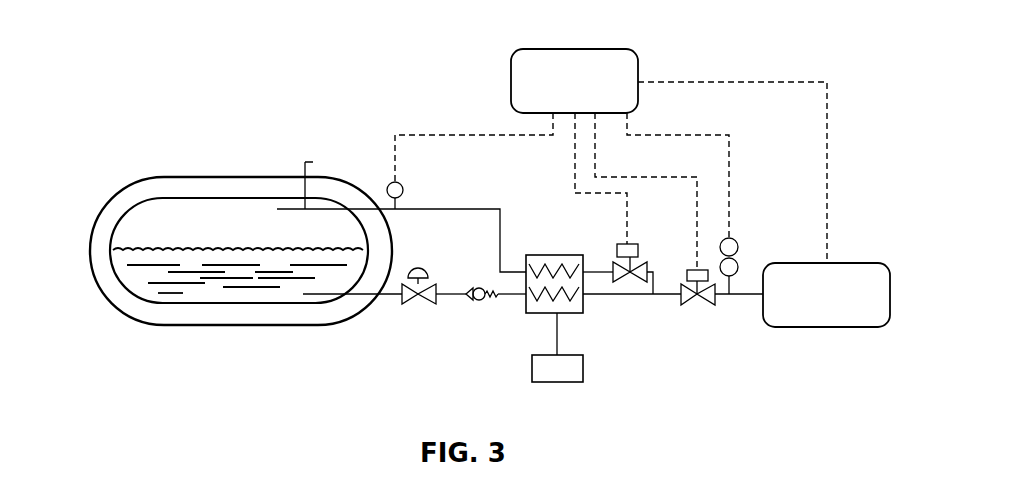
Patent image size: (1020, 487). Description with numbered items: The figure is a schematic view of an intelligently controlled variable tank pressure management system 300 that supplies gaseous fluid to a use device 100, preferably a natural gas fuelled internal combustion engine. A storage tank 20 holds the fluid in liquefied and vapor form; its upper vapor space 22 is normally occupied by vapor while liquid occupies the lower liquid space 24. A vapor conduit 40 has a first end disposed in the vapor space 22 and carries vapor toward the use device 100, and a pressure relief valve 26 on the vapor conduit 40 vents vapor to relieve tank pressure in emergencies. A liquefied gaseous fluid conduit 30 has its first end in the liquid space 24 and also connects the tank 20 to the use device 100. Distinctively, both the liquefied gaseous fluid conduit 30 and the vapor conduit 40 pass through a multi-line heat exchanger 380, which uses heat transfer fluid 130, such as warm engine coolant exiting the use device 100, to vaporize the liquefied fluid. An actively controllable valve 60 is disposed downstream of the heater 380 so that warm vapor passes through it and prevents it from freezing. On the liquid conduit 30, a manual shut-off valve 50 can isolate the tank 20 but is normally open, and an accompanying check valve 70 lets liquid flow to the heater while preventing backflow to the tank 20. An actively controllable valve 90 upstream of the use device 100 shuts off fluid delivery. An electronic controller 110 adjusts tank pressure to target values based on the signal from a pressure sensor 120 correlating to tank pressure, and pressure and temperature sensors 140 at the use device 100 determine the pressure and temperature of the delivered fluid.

The intelligently controlled variable tank pressure management system 300 is at (310, 90).
The storage tank 20 is at (147, 177).
The vapor space 22 is at (170, 220).
The liquid space 24 is at (185, 295).
The pressure relief valve 26 is at (304, 168).
The liquefied gaseous fluid conduit 30 is at (382, 297).
The vapor conduit 40 is at (463, 210).
The manual shut-off valve 50 is at (410, 305).
The actively controllable valve 60 is at (617, 263).
The check valve 70 is at (473, 305).
The actively controllable valve 90 is at (702, 305).
The use device 100 is at (812, 306).
The electronic controller 110 is at (560, 92).
The pressure sensor 120 is at (387, 190).
The heat transfer fluid 130 is at (557, 368).
The pressure and temperature sensors 140 is at (738, 248).
The multi-line heat exchanger 380 is at (538, 313).